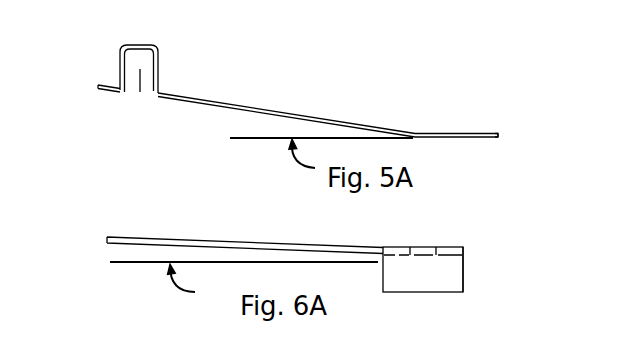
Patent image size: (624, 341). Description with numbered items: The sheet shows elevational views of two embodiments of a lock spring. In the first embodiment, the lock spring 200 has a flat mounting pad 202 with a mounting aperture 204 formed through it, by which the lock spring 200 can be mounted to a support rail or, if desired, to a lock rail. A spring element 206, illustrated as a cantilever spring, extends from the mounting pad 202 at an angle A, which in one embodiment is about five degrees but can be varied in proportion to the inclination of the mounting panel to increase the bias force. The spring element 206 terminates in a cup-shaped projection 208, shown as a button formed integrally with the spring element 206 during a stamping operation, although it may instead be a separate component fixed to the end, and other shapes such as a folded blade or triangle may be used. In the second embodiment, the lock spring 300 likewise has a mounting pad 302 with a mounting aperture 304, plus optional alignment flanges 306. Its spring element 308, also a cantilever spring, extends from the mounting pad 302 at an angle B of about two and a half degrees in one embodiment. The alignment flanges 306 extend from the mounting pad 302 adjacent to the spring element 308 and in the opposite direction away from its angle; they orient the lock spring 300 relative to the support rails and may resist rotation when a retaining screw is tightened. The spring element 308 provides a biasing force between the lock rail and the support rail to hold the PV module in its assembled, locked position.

In FIG. 5A, the lock spring 200 is at (303, 83).
In FIG. 5A, the mounting pad 202 is at (497, 132).
In FIG. 5A, the mounting aperture 204 is at (458, 132).
In FIG. 5A, the spring element 206 is at (255, 115).
In FIG. 5A, the cup-shaped projection 208 is at (139, 69).
In FIG. 5A, the angle A is at (291, 114).
In FIG. 6A, the lock spring 300 is at (316, 261).
In FIG. 6A, the mounting pad 302 is at (467, 252).
In FIG. 6A, the mounting aperture 304 is at (432, 248).
In FIG. 6A, the alignment flanges 306 is at (479, 261).
In FIG. 6A, the spring element 308 is at (130, 238).
In FIG. 6A, the angle B is at (167, 244).